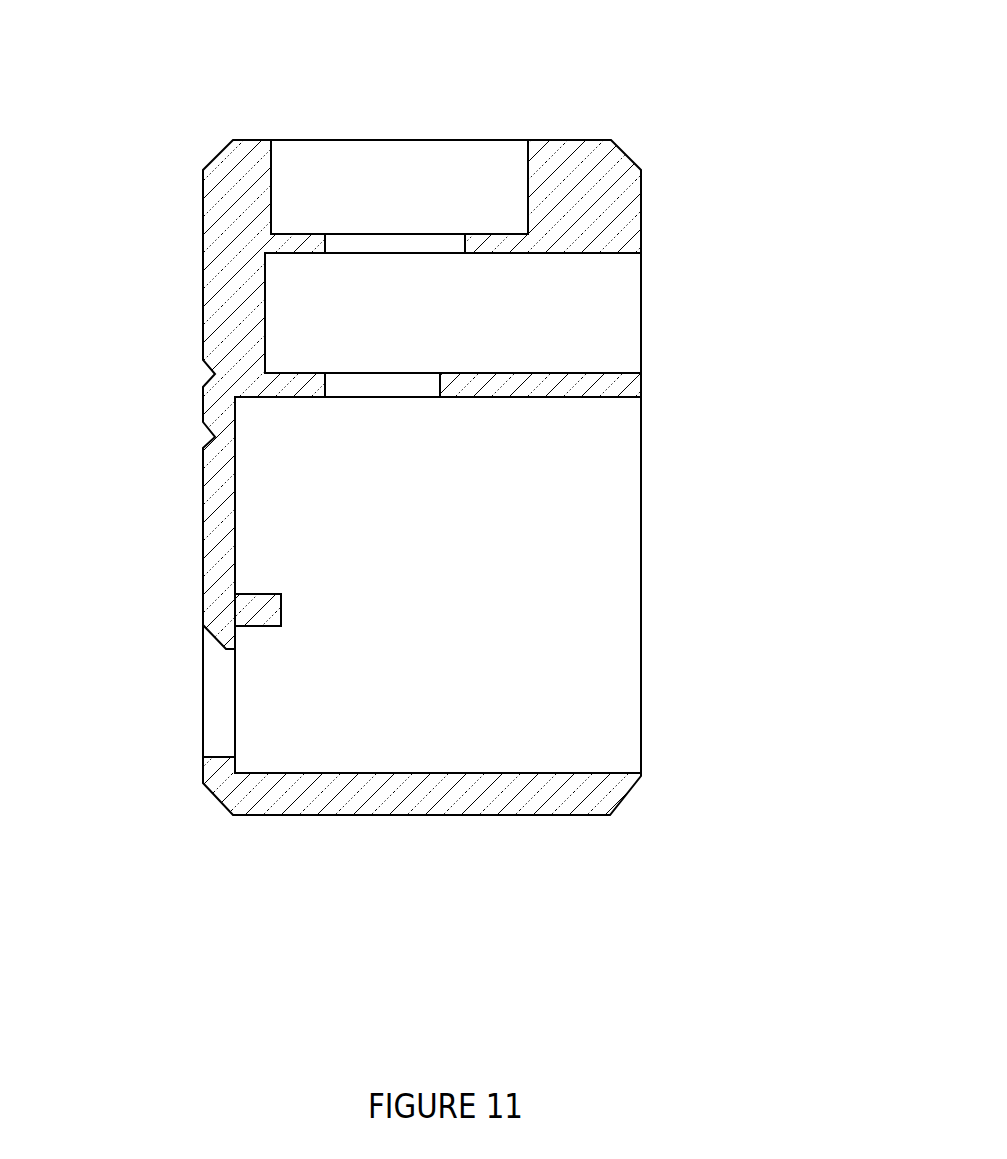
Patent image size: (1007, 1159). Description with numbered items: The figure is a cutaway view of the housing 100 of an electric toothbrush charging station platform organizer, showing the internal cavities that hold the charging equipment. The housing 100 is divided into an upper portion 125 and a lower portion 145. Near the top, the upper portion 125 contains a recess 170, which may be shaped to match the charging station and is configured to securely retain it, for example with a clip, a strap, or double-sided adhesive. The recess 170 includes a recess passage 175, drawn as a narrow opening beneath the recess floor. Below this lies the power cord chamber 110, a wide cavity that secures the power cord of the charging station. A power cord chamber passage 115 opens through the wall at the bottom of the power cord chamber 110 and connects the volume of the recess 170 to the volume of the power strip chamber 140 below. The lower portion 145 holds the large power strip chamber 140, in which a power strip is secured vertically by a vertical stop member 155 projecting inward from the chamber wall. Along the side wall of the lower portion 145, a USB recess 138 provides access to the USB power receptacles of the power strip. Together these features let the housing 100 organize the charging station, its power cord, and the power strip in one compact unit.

The housing 100 is at (107, 42).
The recess 170 is at (367, 172).
The recess passage 175 is at (447, 238).
The power cord chamber 110 is at (532, 316).
The power cord chamber passage 115 is at (368, 378).
The upper portion 125 is at (155, 142).
The power strip chamber 140 is at (555, 458).
The lower portion 145 is at (155, 412).
The vertical stop member 155 is at (281, 600).
The USB recess 138 is at (218, 696).